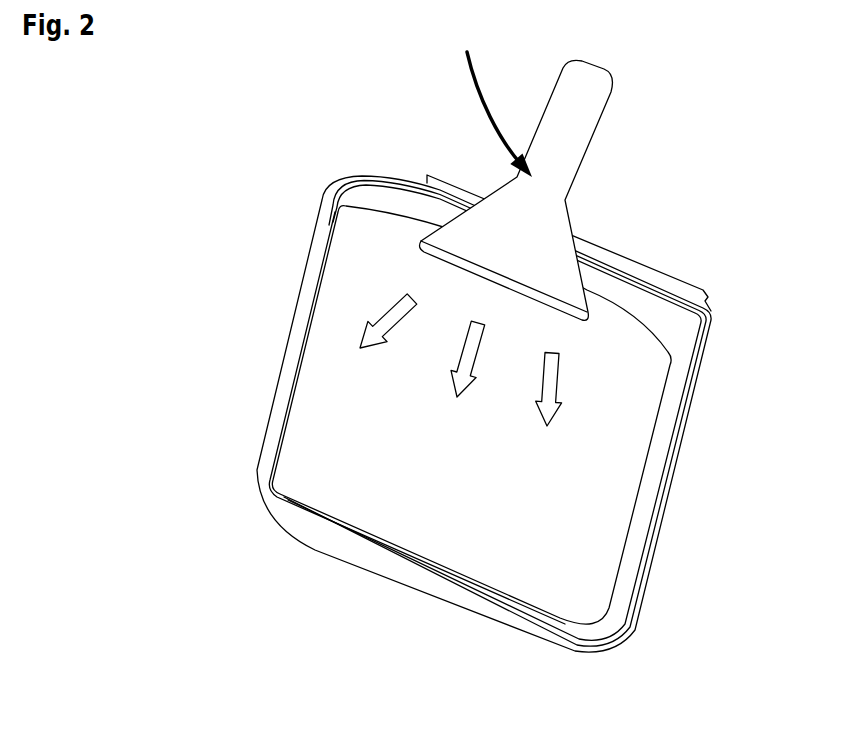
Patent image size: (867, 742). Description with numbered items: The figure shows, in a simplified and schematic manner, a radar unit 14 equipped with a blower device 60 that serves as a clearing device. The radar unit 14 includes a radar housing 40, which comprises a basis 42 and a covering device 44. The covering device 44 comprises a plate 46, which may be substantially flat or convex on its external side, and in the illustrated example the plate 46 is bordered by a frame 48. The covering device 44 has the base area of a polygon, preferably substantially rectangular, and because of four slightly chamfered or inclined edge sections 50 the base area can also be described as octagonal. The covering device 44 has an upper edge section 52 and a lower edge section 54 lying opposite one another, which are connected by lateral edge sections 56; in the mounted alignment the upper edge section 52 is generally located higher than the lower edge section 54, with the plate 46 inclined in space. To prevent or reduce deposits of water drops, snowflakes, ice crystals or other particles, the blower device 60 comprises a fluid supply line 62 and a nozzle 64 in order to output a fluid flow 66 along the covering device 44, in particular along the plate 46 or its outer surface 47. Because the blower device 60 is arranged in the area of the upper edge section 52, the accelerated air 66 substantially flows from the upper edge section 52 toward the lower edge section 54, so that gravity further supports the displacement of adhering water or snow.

The radar unit 14 is at (250, 265).
The radar housing 40 is at (722, 322).
The basis 42 is at (665, 290).
The covering device 44 is at (603, 525).
The plate 46 is at (465, 530).
The outer surface 47 is at (343, 424).
The frame 48 is at (322, 543).
The chamfered edge sections 50 is at (388, 200).
The upper edge section 52 is at (592, 276).
The lower edge section 54 is at (387, 570).
The lateral edge sections 56 is at (300, 342).
The blower device 60 is at (485, 100).
The fluid supply line 62 is at (573, 127).
The nozzle 64 is at (533, 296).
The fluid flow 66 is at (378, 347).